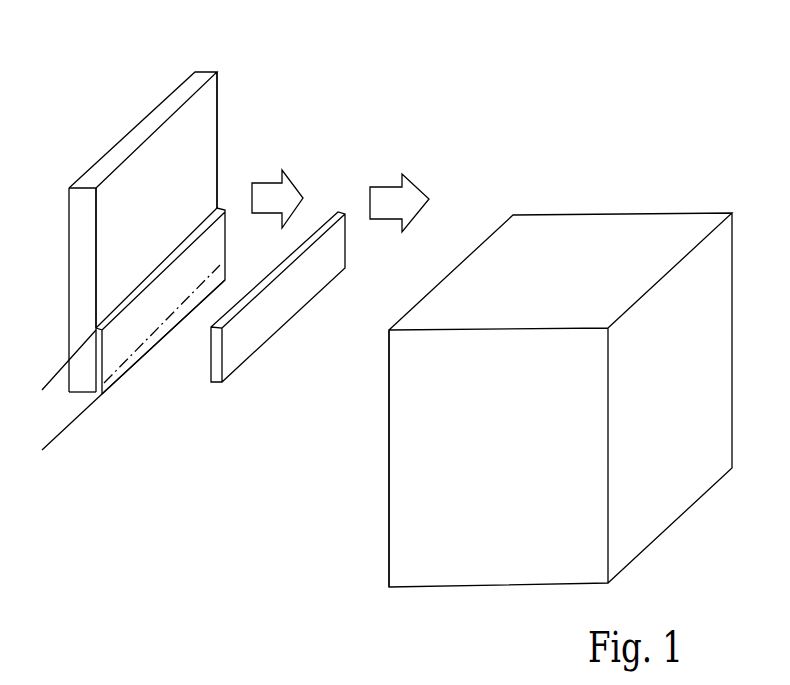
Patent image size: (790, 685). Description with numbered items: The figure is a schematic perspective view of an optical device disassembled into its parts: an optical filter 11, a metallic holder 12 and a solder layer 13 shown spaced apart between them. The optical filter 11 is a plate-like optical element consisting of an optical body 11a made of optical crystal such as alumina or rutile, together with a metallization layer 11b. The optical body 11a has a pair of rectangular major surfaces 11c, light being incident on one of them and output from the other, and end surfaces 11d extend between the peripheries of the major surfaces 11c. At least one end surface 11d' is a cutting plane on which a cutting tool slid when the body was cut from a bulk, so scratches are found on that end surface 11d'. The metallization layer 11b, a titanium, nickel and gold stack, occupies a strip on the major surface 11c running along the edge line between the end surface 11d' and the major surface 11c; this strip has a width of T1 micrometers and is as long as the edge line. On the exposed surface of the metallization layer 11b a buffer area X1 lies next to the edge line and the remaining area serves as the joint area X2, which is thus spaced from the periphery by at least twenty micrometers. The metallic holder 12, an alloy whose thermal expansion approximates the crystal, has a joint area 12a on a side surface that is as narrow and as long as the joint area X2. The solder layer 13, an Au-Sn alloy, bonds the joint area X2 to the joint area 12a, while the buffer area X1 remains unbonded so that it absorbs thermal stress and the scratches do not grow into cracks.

The optical filter 11 is at (207, 95).
The optical body 11a is at (202, 140).
The metallization layer 11b is at (204, 250).
The major surfaces 11c is at (162, 232).
The end surfaces 11d is at (74, 247).
The end surface 11d' is at (104, 438).
The metallic holder 12 is at (555, 232).
The joint area 12a is at (389, 334).
The solder layer 13 is at (253, 332).
The buffer area X1 is at (118, 373).
The joint area X2 is at (130, 322).
The width of metallization layer T1 is at (50, 352).